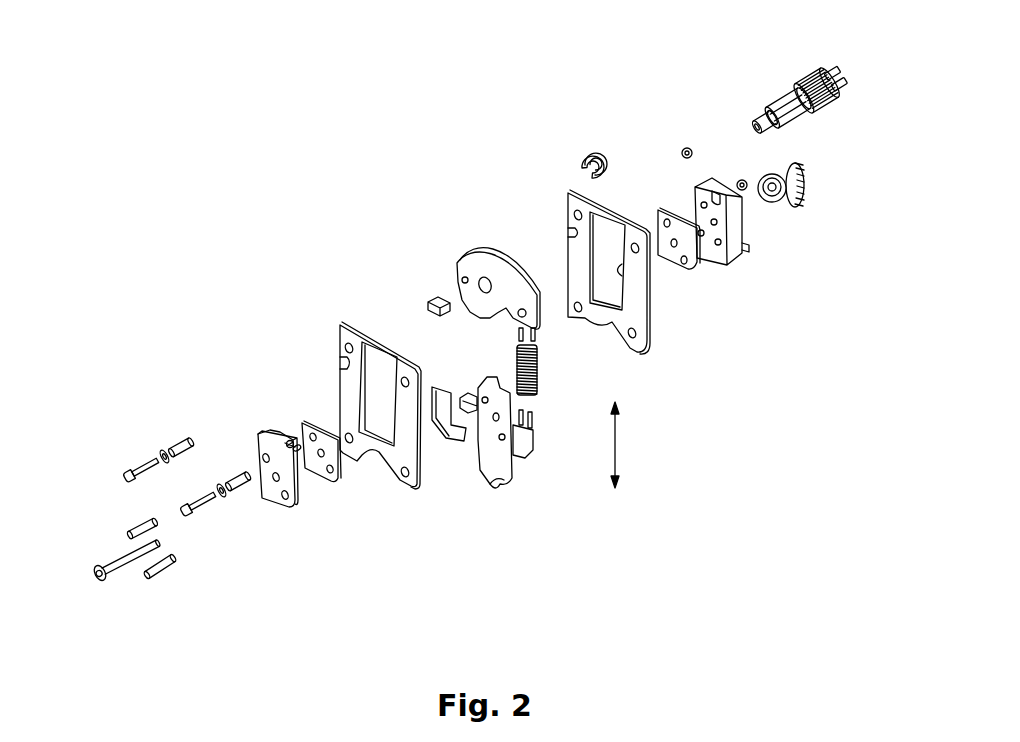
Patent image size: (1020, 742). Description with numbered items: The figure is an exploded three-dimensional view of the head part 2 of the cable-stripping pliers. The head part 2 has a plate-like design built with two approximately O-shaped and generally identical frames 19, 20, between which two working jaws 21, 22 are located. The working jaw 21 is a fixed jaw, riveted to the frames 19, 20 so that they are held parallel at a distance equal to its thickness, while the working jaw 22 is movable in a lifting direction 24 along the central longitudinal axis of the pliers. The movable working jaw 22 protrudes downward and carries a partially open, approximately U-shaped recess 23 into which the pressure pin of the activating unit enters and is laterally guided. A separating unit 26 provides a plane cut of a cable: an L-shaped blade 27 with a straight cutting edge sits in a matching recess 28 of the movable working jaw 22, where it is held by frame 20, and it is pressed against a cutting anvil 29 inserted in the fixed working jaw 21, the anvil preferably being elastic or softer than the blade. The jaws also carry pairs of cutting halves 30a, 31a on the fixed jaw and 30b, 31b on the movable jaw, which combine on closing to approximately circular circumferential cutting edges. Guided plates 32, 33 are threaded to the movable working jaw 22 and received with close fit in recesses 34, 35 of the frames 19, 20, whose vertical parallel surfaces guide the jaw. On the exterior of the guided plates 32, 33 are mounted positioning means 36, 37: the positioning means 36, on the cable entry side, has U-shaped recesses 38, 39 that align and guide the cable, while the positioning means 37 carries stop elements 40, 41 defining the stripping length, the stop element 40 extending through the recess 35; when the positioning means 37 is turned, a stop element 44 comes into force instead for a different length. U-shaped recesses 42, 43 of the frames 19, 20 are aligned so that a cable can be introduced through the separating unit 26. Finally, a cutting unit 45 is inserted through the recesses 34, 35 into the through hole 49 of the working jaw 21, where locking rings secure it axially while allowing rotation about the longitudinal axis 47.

The head part 2 is at (190, 342).
The frame 19 is at (717, 204).
The frame 20 is at (296, 343).
The fixed working jaw 21 is at (472, 197).
The movable working jaw 22 is at (495, 504).
The recess 23 is at (488, 477).
The lifting direction 24 is at (610, 447).
The separating unit 26 is at (430, 323).
The blade 27 is at (453, 430).
The recess 28 is at (483, 413).
The cutting anvil 29 is at (436, 297).
The cutting half 30a is at (445, 298).
The cutting half 30b is at (525, 388).
The cutting half 31a is at (516, 308).
The cutting half 31b is at (500, 394).
The guided plate 32 is at (314, 463).
The guided plate 33 is at (673, 217).
The recess 34 is at (393, 430).
The recess 35 is at (754, 288).
The positioning means 36 is at (272, 495).
The positioning means 37 is at (793, 159).
The U-shaped recess 38 is at (289, 443).
The U-shaped recess 39 is at (294, 447).
The stop element 40 is at (723, 223).
The stop element 41 is at (799, 162).
The U-shaped recess 42 is at (348, 330).
The U-shaped recess 43 is at (561, 145).
The stop element 44 is at (748, 245).
The cutting unit 45 is at (802, 93).
The longitudinal axis 47 is at (835, 78).
The through hole 49 is at (483, 283).